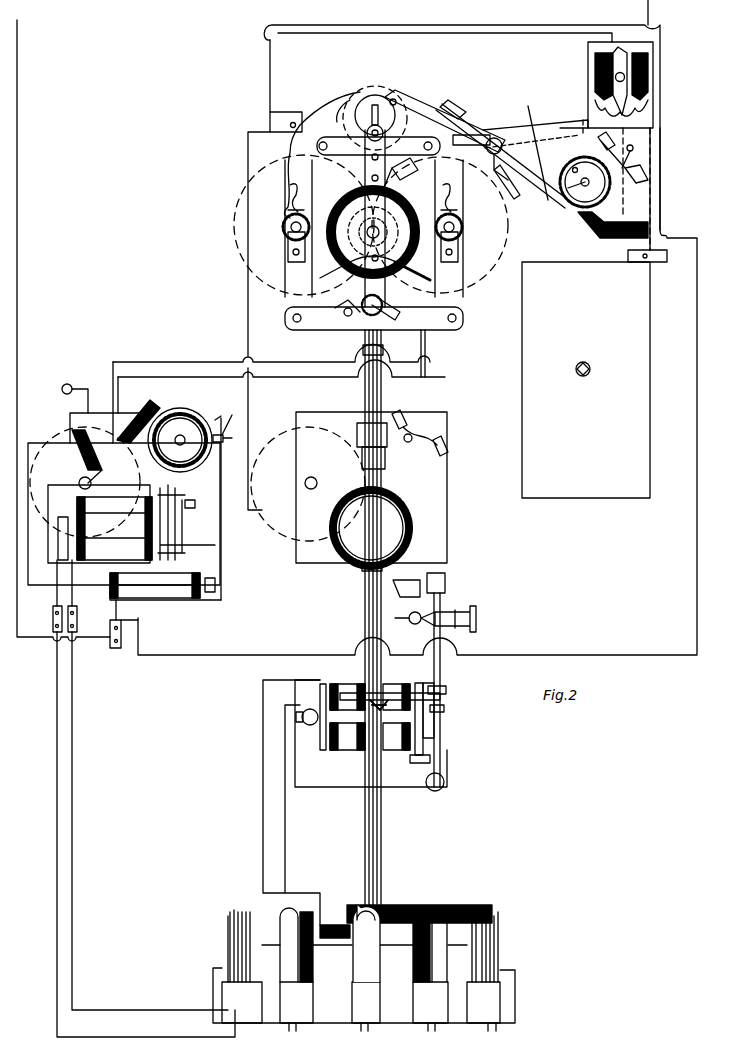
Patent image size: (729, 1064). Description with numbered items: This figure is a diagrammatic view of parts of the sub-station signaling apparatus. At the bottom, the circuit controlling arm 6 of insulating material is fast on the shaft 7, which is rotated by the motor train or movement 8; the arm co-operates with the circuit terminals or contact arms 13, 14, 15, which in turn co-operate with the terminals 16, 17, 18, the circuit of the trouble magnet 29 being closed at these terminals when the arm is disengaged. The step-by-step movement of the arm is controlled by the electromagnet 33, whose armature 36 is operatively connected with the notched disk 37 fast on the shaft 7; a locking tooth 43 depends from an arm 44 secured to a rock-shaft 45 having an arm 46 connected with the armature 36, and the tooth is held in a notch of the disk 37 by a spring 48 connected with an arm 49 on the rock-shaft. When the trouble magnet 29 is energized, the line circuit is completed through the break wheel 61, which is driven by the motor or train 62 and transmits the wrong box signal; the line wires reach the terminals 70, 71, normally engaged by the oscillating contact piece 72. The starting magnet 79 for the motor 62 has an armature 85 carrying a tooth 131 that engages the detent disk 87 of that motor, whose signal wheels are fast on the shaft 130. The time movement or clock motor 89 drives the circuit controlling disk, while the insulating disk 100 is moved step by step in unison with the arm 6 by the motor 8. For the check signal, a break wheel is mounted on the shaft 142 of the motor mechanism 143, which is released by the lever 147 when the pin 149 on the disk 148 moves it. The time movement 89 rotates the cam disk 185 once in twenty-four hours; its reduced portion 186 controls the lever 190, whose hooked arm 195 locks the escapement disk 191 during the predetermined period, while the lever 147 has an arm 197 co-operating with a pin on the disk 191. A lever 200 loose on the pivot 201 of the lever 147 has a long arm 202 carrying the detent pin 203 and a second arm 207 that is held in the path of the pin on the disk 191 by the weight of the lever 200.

The circuit controlling arm 6 is at (398, 903).
The shaft 7 is at (382, 832).
The motor train or movement 8 is at (447, 497).
The circuit terminal or contact arm 13 is at (248, 925).
The circuit terminal or contact arm 14 is at (240, 912).
The circuit terminal or contact arm 15 is at (234, 908).
The circuit terminal or contact arm 16 is at (246, 938).
The circuit terminal or contact arm 17 is at (232, 946).
The circuit terminal or contact arm 18 is at (230, 920).
The trouble magnet 29 is at (112, 515).
The electromagnet 33 is at (348, 750).
The armature 36 is at (434, 722).
The disk 37 is at (346, 686).
The locking tooth or projection 43 is at (380, 712).
The arm 44 is at (392, 693).
The rock-shaft 45 is at (441, 668).
The arm 46 is at (419, 683).
The spring 48 is at (398, 586).
The arm 49 is at (433, 574).
The break wheel 61 is at (162, 455).
The motor or train 62 is at (70, 418).
The terminal 70 is at (595, 88).
The terminal 71 is at (647, 92).
The contact piece or member 72 is at (640, 108).
The electromagnet (starting magnet) 79 is at (170, 600).
The armature 85 is at (222, 575).
The detent disk 87 is at (190, 410).
The time movement or clock motor 89 is at (248, 192).
The insulating disk 100 is at (340, 245).
The shaft 130 is at (181, 446).
The tooth or projection 131 is at (232, 420).
The shaft 142 is at (589, 184).
The motor mechanism 143 is at (655, 188).
The lever 147 is at (455, 195).
The disk 148 is at (352, 172).
The stud or pin 149 is at (425, 172).
The cam disk 185 is at (373, 95).
The reduced portion 186 is at (340, 106).
The lever 190 is at (428, 96).
The escapement disk (detent disk) 191 is at (560, 132).
The arm 195 is at (500, 182).
The arm 197 is at (590, 135).
The lever 200 is at (455, 106).
The pivot 201 is at (496, 138).
The long arm 202 is at (556, 198).
The pin (detent pin) 203 is at (578, 214).
The arm 207 is at (529, 108).